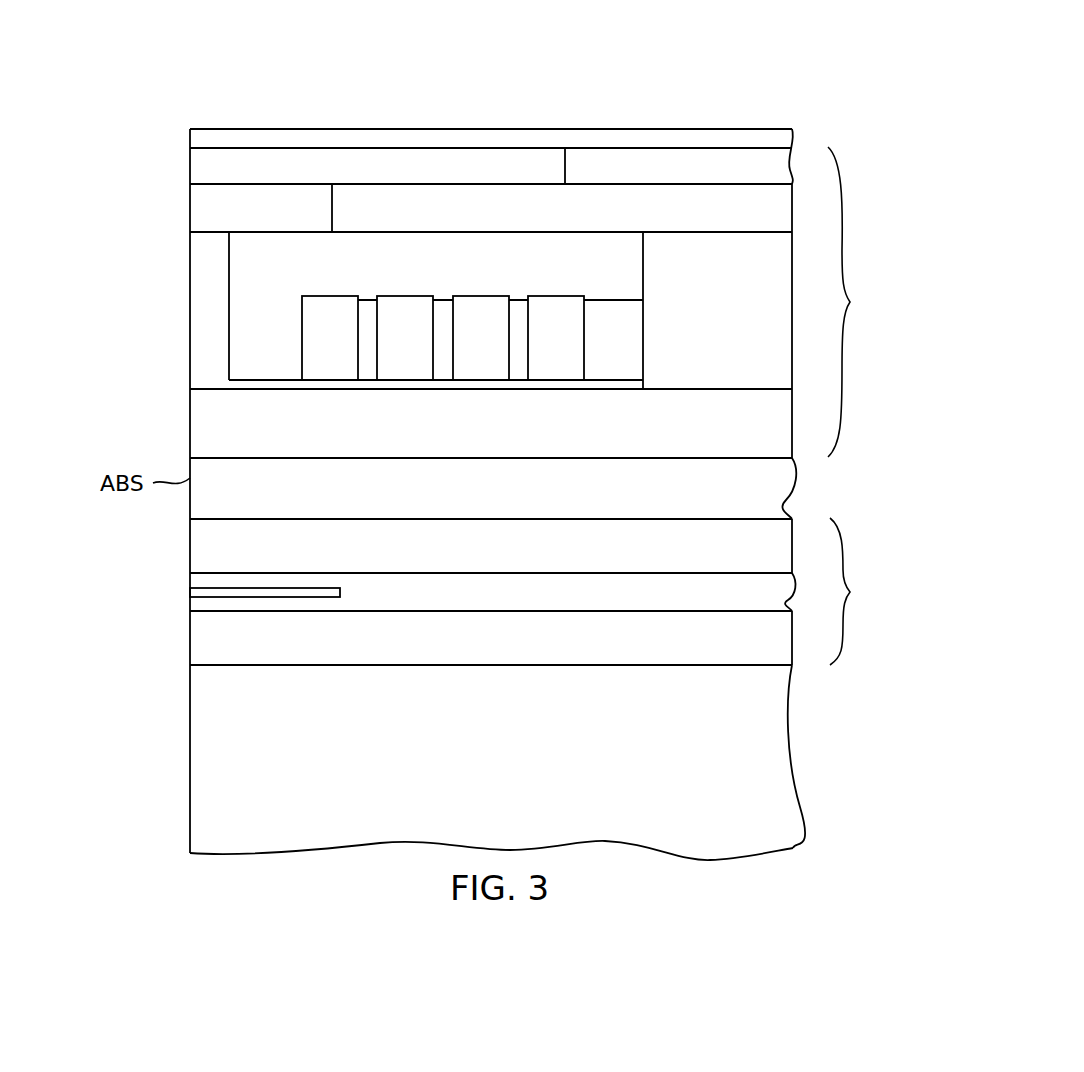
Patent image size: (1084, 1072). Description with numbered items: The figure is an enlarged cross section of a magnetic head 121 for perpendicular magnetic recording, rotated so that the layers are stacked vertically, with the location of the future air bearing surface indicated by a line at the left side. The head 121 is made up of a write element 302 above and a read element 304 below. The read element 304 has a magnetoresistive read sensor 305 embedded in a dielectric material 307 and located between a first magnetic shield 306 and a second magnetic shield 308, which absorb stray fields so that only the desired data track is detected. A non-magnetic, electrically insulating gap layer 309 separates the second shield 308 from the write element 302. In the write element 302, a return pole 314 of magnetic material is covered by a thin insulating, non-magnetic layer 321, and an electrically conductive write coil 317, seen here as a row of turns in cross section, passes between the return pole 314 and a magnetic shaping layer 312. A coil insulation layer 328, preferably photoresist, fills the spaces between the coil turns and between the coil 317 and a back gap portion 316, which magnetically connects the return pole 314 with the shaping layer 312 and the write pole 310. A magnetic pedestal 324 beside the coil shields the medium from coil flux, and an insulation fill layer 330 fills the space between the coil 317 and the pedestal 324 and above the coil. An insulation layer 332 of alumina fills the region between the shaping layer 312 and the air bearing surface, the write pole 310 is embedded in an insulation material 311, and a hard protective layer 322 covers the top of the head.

The magnetic head 121 is at (535, 48).
The write element 302 is at (843, 220).
The read element 304 is at (843, 530).
The magnetoresistive read sensor 305 is at (340, 592).
The first magnetic shield 306 is at (425, 637).
The dielectric material 307 is at (668, 591).
The second magnetic shield 308 is at (427, 548).
The gap layer 309 is at (445, 480).
The write pole 310 is at (280, 168).
The insulation material 311 is at (688, 163).
The magnetic shaping layer 312 is at (452, 210).
The return pole 314 is at (432, 420).
The back gap portion 316 is at (178, 240).
The write coil 317 is at (314, 337).
The thin insulating non-magnetic layer 321 is at (292, 383).
The protective layer 322 is at (385, 138).
The magnetic pedestal 324 is at (217, 326).
The coil insulation layer 328 is at (367, 360).
The insulation fill layer 330 is at (505, 258).
The insulation layer 332 is at (270, 208).